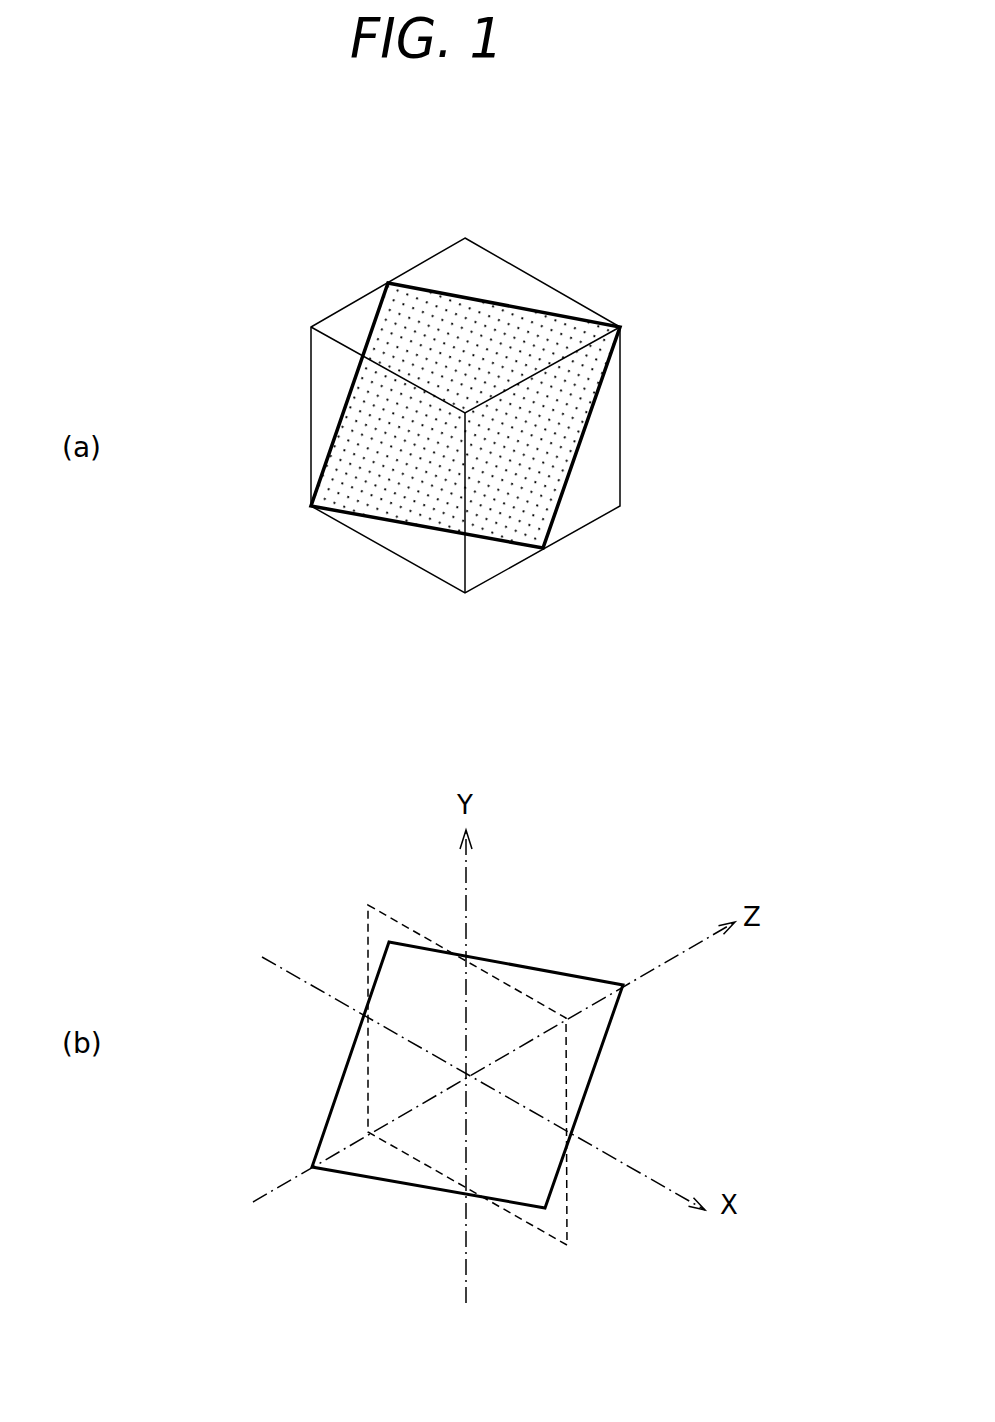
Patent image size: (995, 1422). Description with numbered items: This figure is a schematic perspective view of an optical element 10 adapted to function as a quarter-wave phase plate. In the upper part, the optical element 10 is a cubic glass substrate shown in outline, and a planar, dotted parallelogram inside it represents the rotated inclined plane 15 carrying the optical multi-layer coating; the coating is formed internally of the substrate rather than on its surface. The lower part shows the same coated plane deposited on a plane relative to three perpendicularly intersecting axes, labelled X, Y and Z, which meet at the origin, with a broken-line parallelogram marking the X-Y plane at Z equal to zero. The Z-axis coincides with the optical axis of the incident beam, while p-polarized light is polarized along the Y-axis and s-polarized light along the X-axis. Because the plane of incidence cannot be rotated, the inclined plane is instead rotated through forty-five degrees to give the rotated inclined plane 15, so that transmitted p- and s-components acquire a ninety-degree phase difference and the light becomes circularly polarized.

The optical element 10 is at (503, 572).
The rotated inclined plane 15 is at (483, 337).